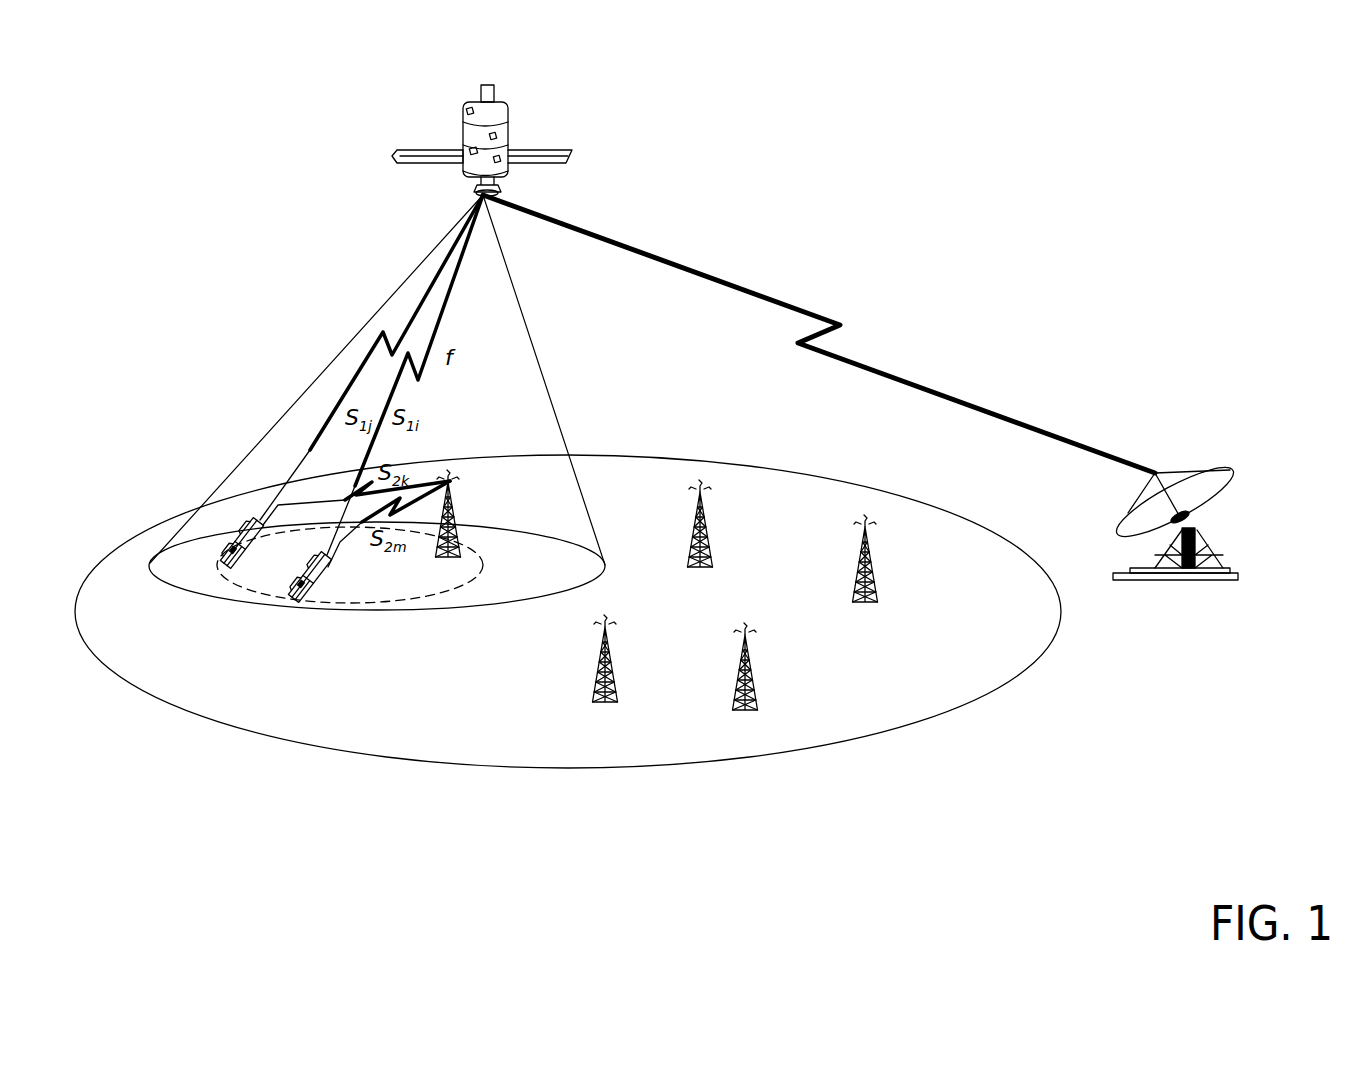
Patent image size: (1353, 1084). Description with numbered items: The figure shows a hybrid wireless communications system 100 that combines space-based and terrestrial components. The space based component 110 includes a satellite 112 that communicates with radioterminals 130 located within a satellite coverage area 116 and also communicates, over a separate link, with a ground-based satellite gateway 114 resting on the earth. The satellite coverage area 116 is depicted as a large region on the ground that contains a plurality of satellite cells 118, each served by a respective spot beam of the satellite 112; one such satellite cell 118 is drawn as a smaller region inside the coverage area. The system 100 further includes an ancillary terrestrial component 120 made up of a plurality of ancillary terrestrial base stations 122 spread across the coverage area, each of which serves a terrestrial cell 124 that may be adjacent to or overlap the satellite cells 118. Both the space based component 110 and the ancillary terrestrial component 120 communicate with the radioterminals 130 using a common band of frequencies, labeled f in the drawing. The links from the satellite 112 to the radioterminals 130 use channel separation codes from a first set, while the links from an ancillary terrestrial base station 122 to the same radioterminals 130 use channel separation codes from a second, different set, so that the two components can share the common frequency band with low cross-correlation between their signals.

The wireless communications system 100 is at (1203, 122).
The space based component 110 is at (1104, 261).
The satellite 112 is at (487, 85).
The ground-based satellite gateway 114 is at (1238, 574).
The satellite coverage area 116 is at (570, 768).
The satellite cell 118 is at (375, 617).
The ancillary terrestrial component 120 is at (892, 778).
The ancillary terrestrial base station 122 is at (450, 557).
The terrestrial cell 124 is at (350, 604).
The radioterminal 130 is at (228, 565).